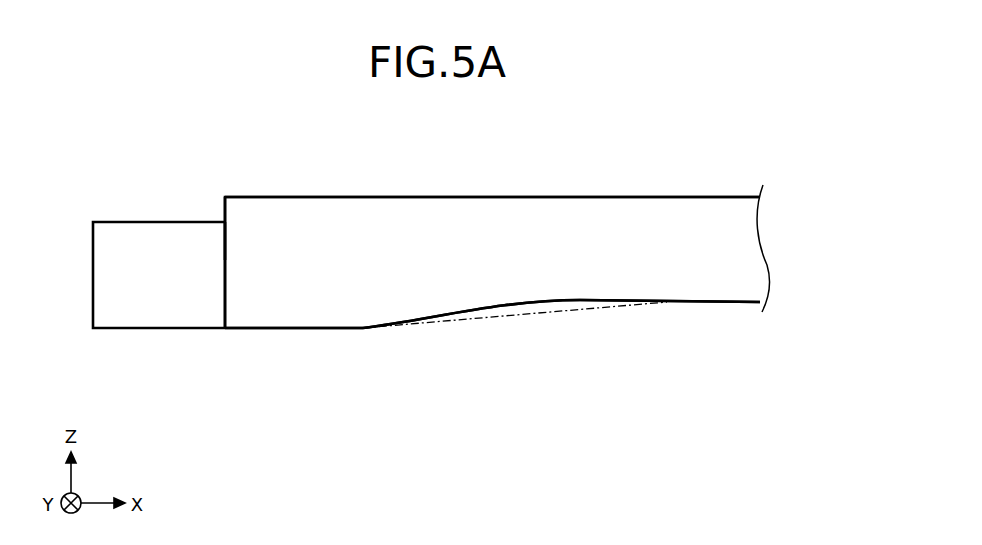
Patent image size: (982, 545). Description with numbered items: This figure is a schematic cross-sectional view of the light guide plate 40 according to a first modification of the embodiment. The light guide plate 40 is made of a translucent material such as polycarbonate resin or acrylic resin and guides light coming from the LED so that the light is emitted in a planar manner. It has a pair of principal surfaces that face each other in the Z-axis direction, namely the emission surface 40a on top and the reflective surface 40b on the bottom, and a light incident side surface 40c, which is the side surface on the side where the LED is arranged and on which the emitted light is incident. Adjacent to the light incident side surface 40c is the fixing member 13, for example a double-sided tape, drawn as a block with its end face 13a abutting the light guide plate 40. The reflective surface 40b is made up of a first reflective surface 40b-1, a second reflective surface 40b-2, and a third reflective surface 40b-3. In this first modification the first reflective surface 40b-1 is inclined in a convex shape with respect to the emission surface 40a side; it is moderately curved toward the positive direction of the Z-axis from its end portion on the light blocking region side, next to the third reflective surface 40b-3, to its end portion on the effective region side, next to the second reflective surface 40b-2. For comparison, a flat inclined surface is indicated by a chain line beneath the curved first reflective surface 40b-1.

The fixing member 13 is at (160, 318).
The end face of holding member 13a is at (226, 290).
The light guide plate 40 is at (740, 248).
The emission surface 40a is at (676, 196).
The reflective surface 40b is at (733, 303).
The first reflective surface 40b-1 is at (514, 303).
The second reflective surface 40b-2 is at (687, 305).
The third reflective surface 40b-3 is at (331, 330).
The light incident side surface 40c is at (224, 240).